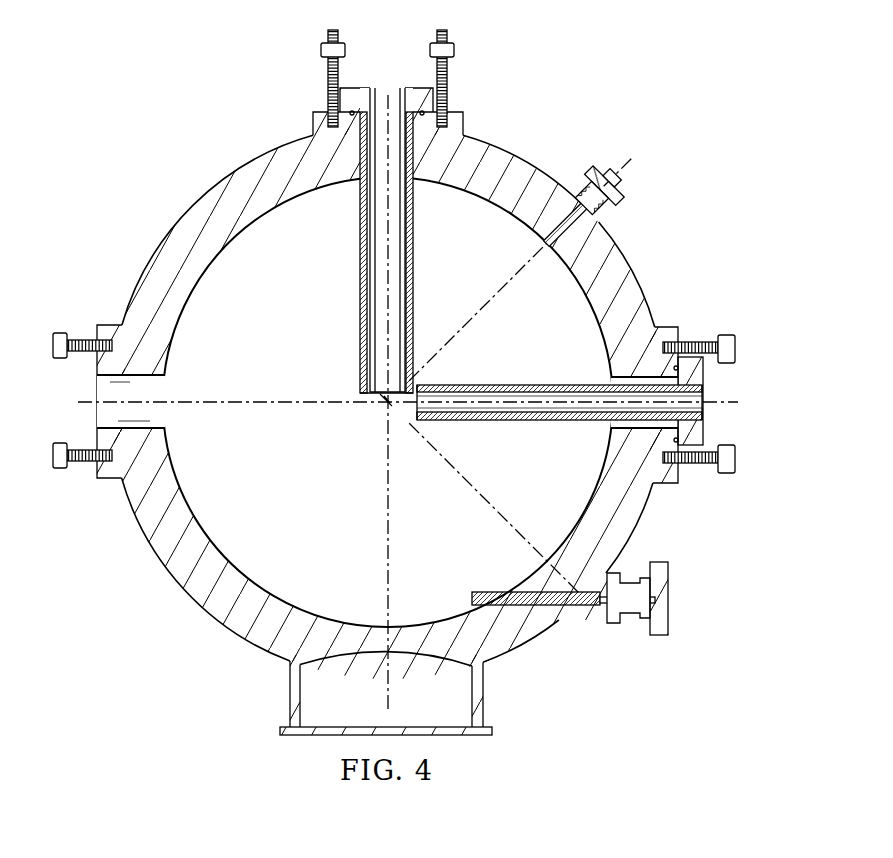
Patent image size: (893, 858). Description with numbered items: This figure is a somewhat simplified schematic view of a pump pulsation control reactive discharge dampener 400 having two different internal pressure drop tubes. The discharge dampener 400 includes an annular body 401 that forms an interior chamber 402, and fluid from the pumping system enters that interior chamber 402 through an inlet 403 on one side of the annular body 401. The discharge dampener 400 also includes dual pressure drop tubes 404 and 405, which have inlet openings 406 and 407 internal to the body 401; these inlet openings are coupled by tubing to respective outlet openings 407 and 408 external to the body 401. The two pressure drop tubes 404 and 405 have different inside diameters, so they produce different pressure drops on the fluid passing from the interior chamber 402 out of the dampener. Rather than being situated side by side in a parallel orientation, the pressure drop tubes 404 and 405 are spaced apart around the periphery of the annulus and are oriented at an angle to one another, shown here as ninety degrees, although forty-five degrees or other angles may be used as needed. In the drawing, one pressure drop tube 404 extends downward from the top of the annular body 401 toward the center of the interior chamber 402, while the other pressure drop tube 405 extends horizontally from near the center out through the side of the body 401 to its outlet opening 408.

The discharge dampener 400 is at (148, 66).
The annular body 401 is at (156, 247).
The interior chamber 402 is at (328, 538).
The inlet 403 is at (105, 388).
The pressure drop tube 404 is at (362, 275).
The pressure drop tube 405 is at (497, 385).
The inlet opening 406 is at (377, 404).
The inlet opening / outlet opening 407 is at (383, 85).
The outlet opening 408 is at (713, 398).